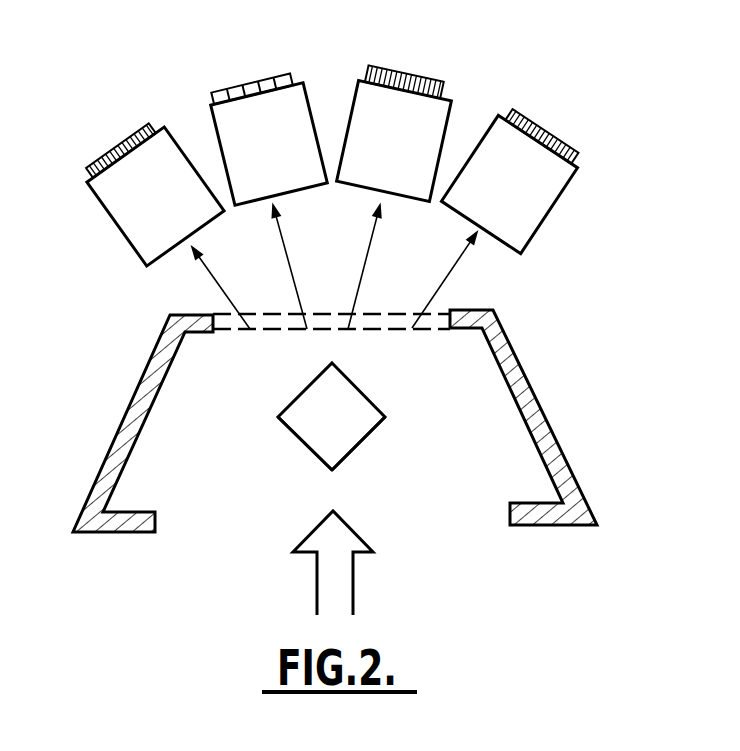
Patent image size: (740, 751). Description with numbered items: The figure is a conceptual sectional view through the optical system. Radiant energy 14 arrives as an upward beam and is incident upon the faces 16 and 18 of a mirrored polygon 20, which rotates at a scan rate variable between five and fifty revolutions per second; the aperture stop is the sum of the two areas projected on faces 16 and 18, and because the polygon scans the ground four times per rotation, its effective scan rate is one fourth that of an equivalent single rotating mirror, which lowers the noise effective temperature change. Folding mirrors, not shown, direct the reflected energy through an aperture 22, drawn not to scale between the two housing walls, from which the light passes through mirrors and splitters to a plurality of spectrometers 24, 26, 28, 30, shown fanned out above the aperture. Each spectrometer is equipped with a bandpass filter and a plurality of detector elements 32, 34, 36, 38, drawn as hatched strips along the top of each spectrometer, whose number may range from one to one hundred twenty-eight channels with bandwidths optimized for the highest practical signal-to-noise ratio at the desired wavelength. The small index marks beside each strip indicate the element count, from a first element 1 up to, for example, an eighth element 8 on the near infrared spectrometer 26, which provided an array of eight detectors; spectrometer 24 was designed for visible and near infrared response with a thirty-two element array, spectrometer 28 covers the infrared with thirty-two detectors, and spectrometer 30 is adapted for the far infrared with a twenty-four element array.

The filter channel index marking 1 is at (299, 99).
The filter channel index marking 8 is at (292, 54).
The radiant energy 14 is at (352, 577).
The face of mirrored polygon 16 is at (307, 443).
The face of mirrored polygon 18 is at (365, 445).
The mirrored polygon 20 is at (355, 390).
The aperture 22 is at (270, 332).
The spectrometer 24 is at (117, 223).
The spectrometer 26 is at (303, 195).
The spectrometer 28 is at (403, 198).
The spectrometer 30 is at (557, 208).
The detector elements 32 is at (112, 140).
The detector elements 34 is at (250, 78).
The detector elements 36 is at (415, 70).
The detector elements 38 is at (558, 125).